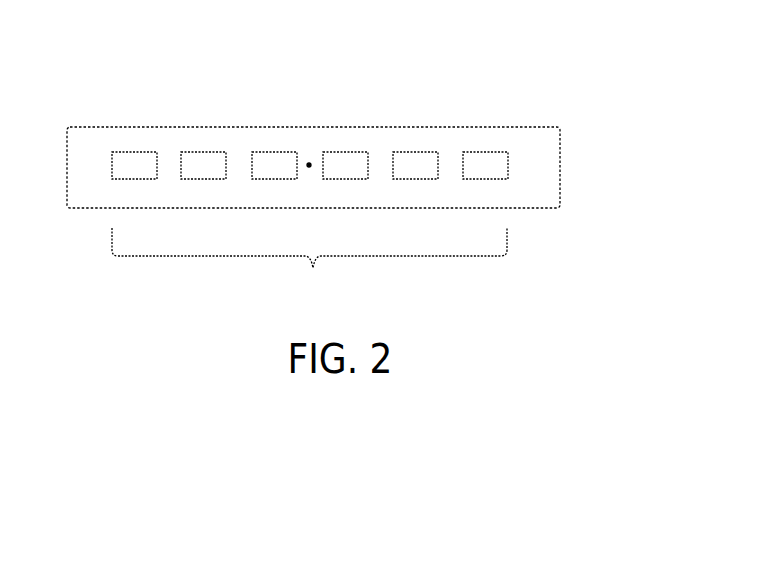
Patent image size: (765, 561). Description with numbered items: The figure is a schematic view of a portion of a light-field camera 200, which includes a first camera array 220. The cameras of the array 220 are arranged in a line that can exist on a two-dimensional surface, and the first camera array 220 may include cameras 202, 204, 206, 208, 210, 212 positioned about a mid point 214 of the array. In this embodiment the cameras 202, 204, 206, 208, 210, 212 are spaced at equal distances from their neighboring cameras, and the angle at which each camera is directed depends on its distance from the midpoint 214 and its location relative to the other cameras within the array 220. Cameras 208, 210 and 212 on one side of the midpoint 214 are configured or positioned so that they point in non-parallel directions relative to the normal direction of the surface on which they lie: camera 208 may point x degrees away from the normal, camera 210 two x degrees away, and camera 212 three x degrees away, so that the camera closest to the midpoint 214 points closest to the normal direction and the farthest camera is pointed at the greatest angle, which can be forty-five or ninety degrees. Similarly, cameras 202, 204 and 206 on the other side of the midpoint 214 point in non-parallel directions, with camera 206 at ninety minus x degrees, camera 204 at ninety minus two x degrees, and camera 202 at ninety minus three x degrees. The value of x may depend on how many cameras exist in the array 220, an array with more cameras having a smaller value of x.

The light-field camera 200 is at (570, 108).
The camera 202 is at (134, 165).
The camera 204 is at (203, 165).
The camera 206 is at (274, 165).
The camera 208 is at (345, 165).
The camera 210 is at (415, 165).
The camera 212 is at (485, 165).
The midpoint 214 is at (309, 162).
The first camera array 220 is at (309, 271).